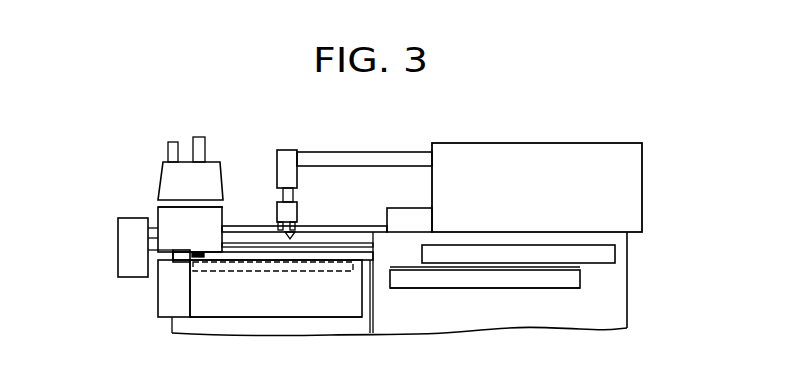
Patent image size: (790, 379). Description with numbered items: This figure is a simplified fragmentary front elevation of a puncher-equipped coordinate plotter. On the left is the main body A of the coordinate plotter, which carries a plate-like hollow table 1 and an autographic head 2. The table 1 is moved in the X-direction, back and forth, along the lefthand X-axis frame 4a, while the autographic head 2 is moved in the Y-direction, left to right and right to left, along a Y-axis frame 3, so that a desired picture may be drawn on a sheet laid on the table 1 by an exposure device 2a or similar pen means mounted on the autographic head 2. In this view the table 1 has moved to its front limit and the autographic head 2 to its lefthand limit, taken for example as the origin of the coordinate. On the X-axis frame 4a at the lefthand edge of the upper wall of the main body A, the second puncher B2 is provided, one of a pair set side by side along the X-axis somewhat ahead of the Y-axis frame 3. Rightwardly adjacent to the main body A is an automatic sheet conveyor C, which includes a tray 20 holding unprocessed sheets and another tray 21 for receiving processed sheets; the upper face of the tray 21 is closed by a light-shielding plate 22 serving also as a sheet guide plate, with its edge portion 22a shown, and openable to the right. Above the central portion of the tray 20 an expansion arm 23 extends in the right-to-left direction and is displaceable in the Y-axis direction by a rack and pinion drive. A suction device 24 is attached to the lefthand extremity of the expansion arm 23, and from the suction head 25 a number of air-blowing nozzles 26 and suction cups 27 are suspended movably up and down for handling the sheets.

The table 1 is at (223, 270).
The autographic head 2 is at (160, 171).
The exposure device 2a is at (197, 250).
The Y-axis frame 3 is at (330, 226).
The X-axis frame 4a is at (168, 305).
The tray 20 is at (612, 264).
The tray 21 is at (522, 289).
The light-shielding plate 22 is at (437, 268).
The pallet engaging portion 22a is at (392, 267).
The expansion arm 23 is at (380, 152).
The suction device 24 is at (285, 150).
The suction head 25 is at (274, 209).
The air-blowing nozzles 26 is at (280, 232).
The suction cups 27 is at (292, 240).
The main body A is at (158, 296).
The second puncher B2 is at (168, 256).
The automatic sheet conveyor C is at (629, 252).